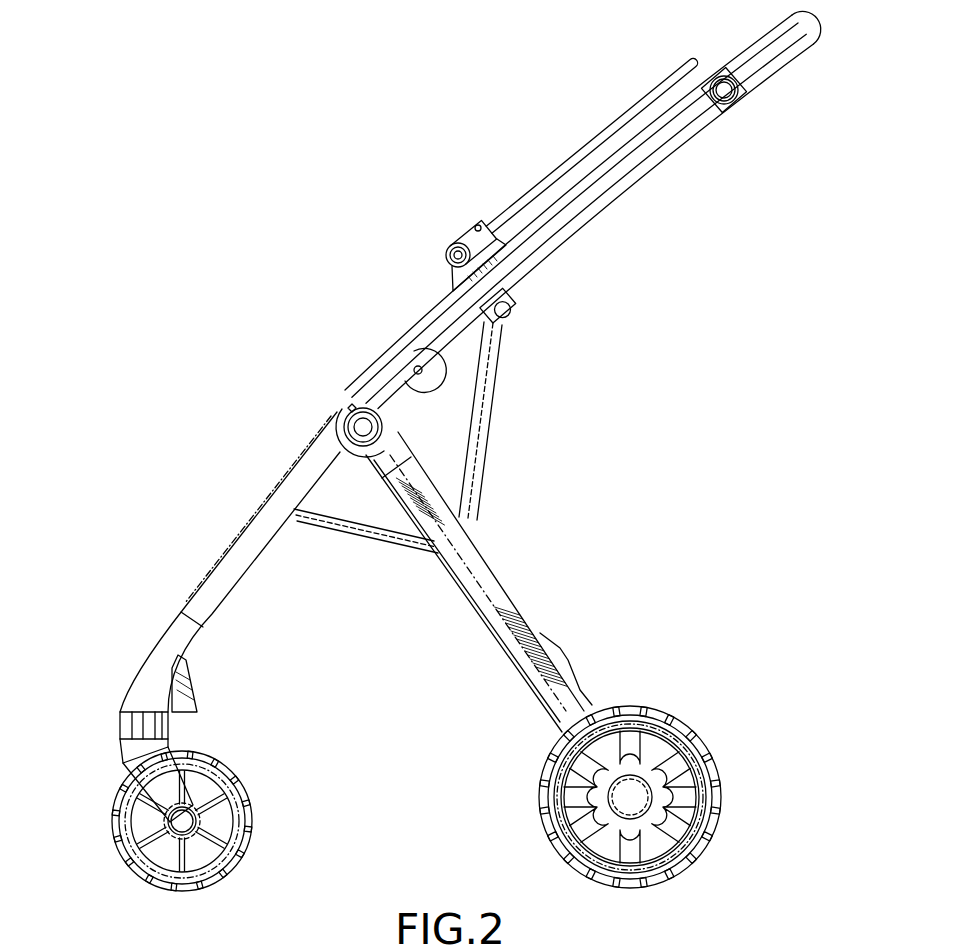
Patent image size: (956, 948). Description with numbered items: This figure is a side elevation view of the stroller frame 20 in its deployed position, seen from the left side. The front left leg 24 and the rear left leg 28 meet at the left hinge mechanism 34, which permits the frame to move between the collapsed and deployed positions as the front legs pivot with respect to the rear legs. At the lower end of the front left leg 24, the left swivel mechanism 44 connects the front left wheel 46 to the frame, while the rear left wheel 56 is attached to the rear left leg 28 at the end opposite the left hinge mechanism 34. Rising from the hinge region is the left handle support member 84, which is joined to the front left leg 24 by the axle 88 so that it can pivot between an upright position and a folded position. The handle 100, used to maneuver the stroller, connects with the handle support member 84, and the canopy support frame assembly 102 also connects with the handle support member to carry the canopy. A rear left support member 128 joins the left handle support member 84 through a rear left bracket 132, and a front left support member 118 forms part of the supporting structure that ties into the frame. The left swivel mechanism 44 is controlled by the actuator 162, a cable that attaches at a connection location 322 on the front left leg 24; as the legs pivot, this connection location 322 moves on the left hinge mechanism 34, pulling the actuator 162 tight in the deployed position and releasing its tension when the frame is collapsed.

The stroller frame 20 is at (468, 371).
The front left leg 24 is at (230, 562).
The rear left leg 28 is at (522, 622).
The left hinge mechanism 34 is at (326, 406).
The left swivel mechanism 44 is at (118, 742).
The front left wheel 46 is at (122, 830).
The rear left wheel 56 is at (707, 760).
The left handle support member 84 is at (563, 222).
The axle 88 is at (418, 368).
The handle 100 is at (787, 53).
The canopy support frame assembly 102 is at (518, 177).
The front left support member 118 is at (357, 530).
The rear left support member 128 is at (481, 425).
The rear left bracket 132 is at (513, 296).
The actuator 162 is at (273, 501).
The connection location 322 is at (343, 411).